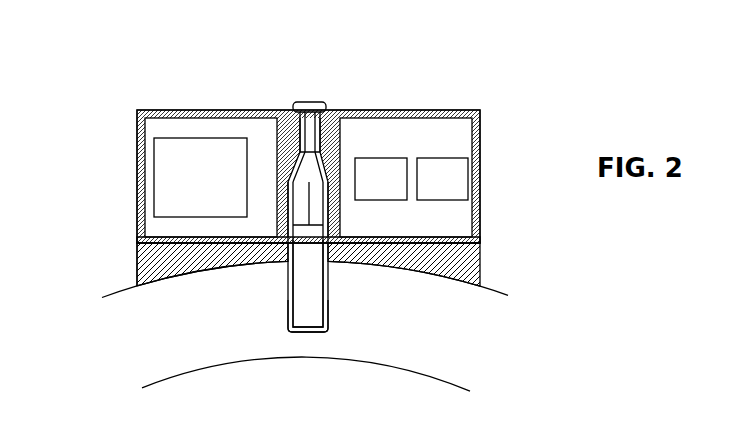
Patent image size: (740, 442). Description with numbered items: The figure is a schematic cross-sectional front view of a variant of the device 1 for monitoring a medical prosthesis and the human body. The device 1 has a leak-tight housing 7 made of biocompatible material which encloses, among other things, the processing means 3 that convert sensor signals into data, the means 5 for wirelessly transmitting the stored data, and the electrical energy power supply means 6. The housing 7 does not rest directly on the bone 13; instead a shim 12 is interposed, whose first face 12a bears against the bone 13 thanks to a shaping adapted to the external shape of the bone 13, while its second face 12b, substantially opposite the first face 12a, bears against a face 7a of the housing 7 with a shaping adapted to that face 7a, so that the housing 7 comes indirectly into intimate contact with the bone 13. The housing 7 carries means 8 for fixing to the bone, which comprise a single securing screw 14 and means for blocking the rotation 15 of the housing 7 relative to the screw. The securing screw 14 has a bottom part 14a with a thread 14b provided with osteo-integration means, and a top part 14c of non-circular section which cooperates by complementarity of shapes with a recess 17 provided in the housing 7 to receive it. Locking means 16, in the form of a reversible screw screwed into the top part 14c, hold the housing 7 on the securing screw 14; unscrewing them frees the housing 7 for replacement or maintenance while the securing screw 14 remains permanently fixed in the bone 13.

The device for monitoring a medical prosthesis and the human body 1 is at (190, 98).
The processing means 3 is at (374, 192).
The means for wirelessly transmitting the stored data 5 is at (435, 192).
The electrical energy power supply means 6 is at (193, 190).
The leak-tight housing 7 is at (137, 150).
The face of the housing 7a is at (168, 237).
The means for fixing to a bone 8 is at (296, 97).
The shim 12 is at (462, 264).
The first face 12a is at (433, 273).
The second face 12b is at (152, 259).
The bone 13 is at (421, 349).
The securing screw 14 is at (288, 275).
The bottom part 14a is at (310, 295).
The thread 14b is at (290, 313).
The top part 14c is at (318, 163).
The means for blocking the rotation 15 is at (343, 150).
The locking means 16 is at (317, 104).
The recess 17 is at (280, 162).